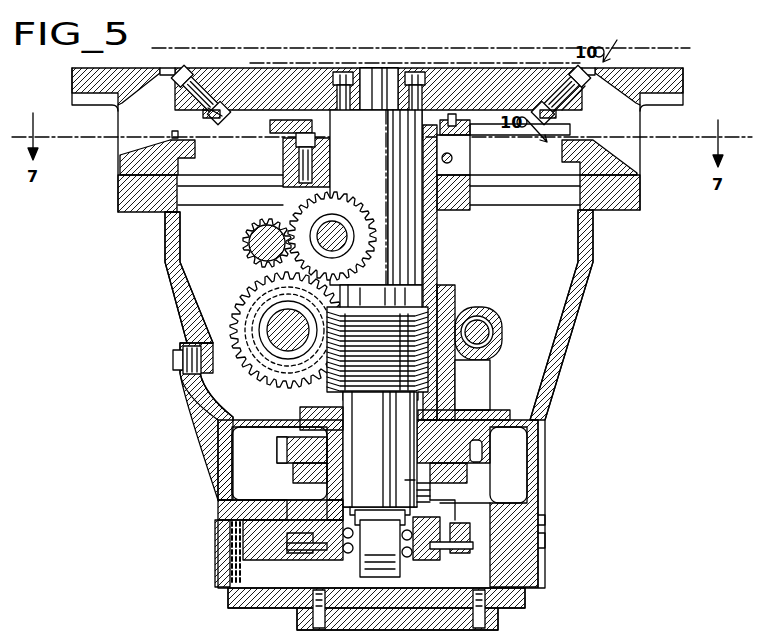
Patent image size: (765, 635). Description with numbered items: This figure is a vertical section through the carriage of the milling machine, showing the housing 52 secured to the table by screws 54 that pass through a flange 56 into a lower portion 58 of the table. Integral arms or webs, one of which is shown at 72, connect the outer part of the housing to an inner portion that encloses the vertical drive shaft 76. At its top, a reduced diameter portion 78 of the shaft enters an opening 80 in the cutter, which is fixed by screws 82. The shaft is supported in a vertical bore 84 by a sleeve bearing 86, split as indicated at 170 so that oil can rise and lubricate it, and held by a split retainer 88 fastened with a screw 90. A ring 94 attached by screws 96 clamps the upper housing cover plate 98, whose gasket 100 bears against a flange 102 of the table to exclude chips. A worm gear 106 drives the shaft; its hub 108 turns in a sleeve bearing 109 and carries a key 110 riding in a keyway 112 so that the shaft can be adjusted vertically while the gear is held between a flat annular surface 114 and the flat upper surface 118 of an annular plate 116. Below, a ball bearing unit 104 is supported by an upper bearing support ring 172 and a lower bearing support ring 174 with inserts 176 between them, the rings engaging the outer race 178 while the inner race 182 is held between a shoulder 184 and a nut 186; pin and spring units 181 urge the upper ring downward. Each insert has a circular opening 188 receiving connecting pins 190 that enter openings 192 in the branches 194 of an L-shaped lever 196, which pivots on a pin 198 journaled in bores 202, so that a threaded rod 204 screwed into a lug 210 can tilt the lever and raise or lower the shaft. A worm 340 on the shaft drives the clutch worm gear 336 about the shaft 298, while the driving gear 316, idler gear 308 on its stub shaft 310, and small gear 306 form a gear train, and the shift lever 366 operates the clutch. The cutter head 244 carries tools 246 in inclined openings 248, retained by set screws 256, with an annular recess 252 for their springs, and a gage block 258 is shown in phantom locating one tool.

The housing 52 is at (595, 297).
The screws 54 is at (133, 212).
The flange 56 is at (637, 198).
The lower portion of the table 58 is at (122, 163).
The arm or web 72 is at (225, 380).
The drive shaft 76 is at (423, 243).
The reduced diameter portion 78 is at (390, 72).
The opening 80 is at (372, 72).
The screws 82 is at (338, 74).
The vertical bore 84 is at (437, 265).
The sleeve bearing 86 is at (437, 215).
The split retainer 88 is at (470, 166).
The screw 90 is at (283, 170).
The ring 94 is at (490, 125).
The screws 96 is at (452, 125).
The upper housing cover plate 98 is at (270, 135).
The gasket 100 is at (172, 131).
The flange 102 is at (195, 158).
The ball bearing unit 104 is at (455, 498).
The worm gear 106 is at (483, 452).
The hub 108 is at (300, 484).
The sleeve bearing 109 is at (470, 395).
The key 110 is at (413, 452).
The keyway 112 is at (405, 485).
The flat annular surface 114 is at (450, 425).
The annular plate 116 is at (293, 470).
The flat upper surface 118 is at (285, 450).
The split 170 is at (340, 158).
The upper bearing support ring 172 is at (340, 515).
The lower bearing support ring 174 is at (300, 590).
The inserts 176 is at (315, 552).
The outer race 178 is at (384, 486).
The pin and spring units 181 is at (430, 483).
The inner race 182 is at (380, 500).
The shoulder 184 is at (392, 535).
The nut 186 is at (345, 585).
The circular opening 188 is at (462, 510).
The connecting pins 190 is at (232, 553).
The openings 192 is at (312, 520).
The branches 194 is at (236, 570).
The L-shaped lever 196 is at (475, 470).
The pivot pin 198 is at (540, 540).
The bores 202 is at (540, 520).
The threaded rod 204 is at (490, 335).
The lug 210 is at (500, 307).
The circular head 244 is at (566, 72).
The cutting tools or bits 246 is at (183, 72).
The inclined openings 248 is at (215, 70).
The annular recess 252 is at (225, 118).
The set screws 256 is at (560, 110).
The gage block 258 is at (640, 52).
The shaft 298 is at (285, 328).
The gear 306 is at (247, 230).
The idler gear 308 is at (352, 200).
The stub shaft 310 is at (340, 250).
The driving gear 316 is at (252, 285).
The worm gear 336 is at (345, 395).
The worm 340 is at (445, 320).
The shift lever 366 is at (250, 245).